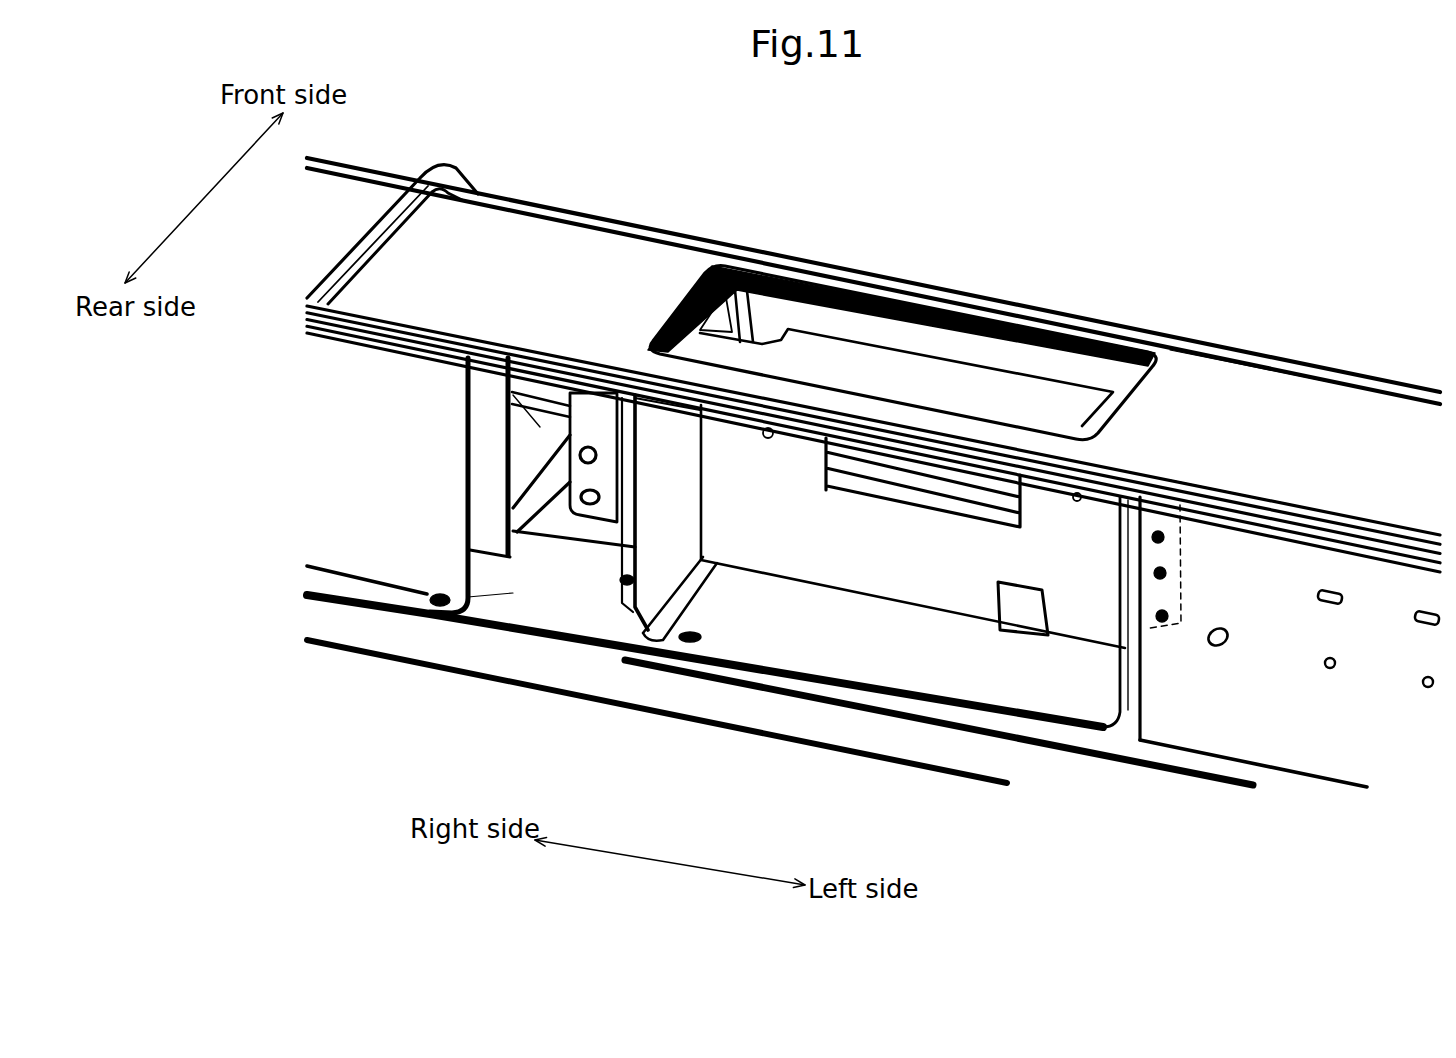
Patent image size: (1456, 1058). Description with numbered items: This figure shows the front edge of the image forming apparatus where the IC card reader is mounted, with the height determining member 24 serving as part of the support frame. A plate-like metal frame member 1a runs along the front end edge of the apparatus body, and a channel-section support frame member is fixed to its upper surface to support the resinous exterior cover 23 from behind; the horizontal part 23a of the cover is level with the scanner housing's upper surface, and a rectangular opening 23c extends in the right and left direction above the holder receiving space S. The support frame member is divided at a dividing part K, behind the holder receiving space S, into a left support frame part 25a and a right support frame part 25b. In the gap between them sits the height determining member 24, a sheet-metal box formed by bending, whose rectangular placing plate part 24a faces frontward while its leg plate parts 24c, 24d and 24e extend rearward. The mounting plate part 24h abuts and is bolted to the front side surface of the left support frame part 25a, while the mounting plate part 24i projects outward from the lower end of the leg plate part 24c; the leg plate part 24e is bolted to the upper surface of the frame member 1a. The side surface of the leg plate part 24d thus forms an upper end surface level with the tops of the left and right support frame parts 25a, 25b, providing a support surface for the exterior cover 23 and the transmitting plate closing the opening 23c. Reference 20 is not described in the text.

The upper frame rail 20 is at (723, 224).
The exterior cover 23 is at (1165, 331).
The horizontal part 23a is at (1268, 413).
The opening 23c is at (977, 338).
The height determining member 24 is at (794, 676).
The placing plate part 24a is at (787, 493).
The leg plate part 24c is at (660, 495).
The leg plate part 24d is at (1033, 397).
The leg plate part 24e is at (947, 670).
The mounting plate part 24h is at (1158, 632).
The mounting plate part 24i is at (610, 493).
The left support frame part 25a is at (1380, 720).
The right support frame part 25b is at (378, 470).
The frame member 1a is at (975, 765).
The holder receiving space S is at (540, 427).
The dividing part K is at (513, 593).